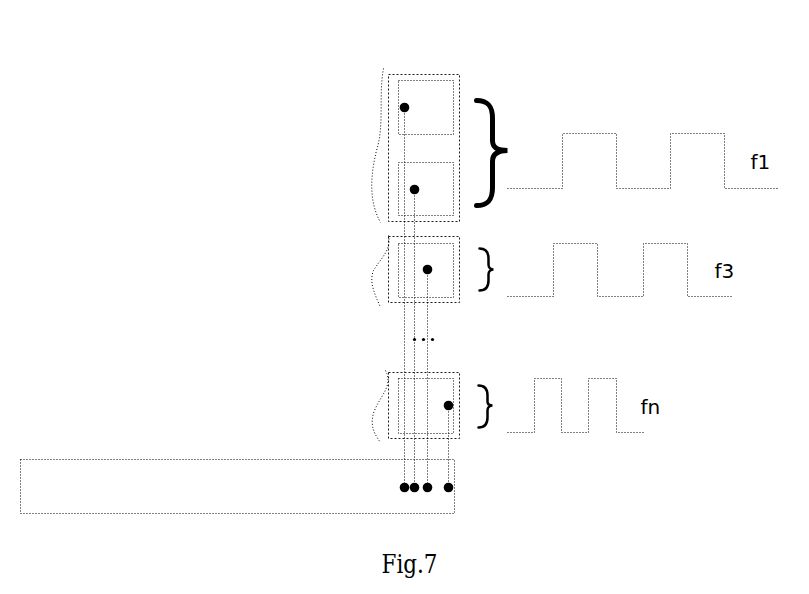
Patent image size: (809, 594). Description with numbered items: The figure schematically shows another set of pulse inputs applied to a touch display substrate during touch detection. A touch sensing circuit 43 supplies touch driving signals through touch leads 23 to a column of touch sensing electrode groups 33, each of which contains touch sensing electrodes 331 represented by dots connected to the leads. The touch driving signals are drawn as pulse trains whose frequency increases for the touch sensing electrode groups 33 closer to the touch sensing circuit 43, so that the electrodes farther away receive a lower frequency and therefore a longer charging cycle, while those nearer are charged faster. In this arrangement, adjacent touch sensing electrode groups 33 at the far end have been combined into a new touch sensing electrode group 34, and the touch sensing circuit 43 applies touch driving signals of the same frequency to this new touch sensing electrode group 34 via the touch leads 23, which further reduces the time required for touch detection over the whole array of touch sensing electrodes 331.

The new touch sensing electrode group 34 is at (425, 74).
The touch sensing electrode 331 is at (398, 115).
The touch sensing electrode group 33 is at (390, 260).
The touch lead 23 is at (405, 348).
The touch sensing circuit 43 is at (198, 459).